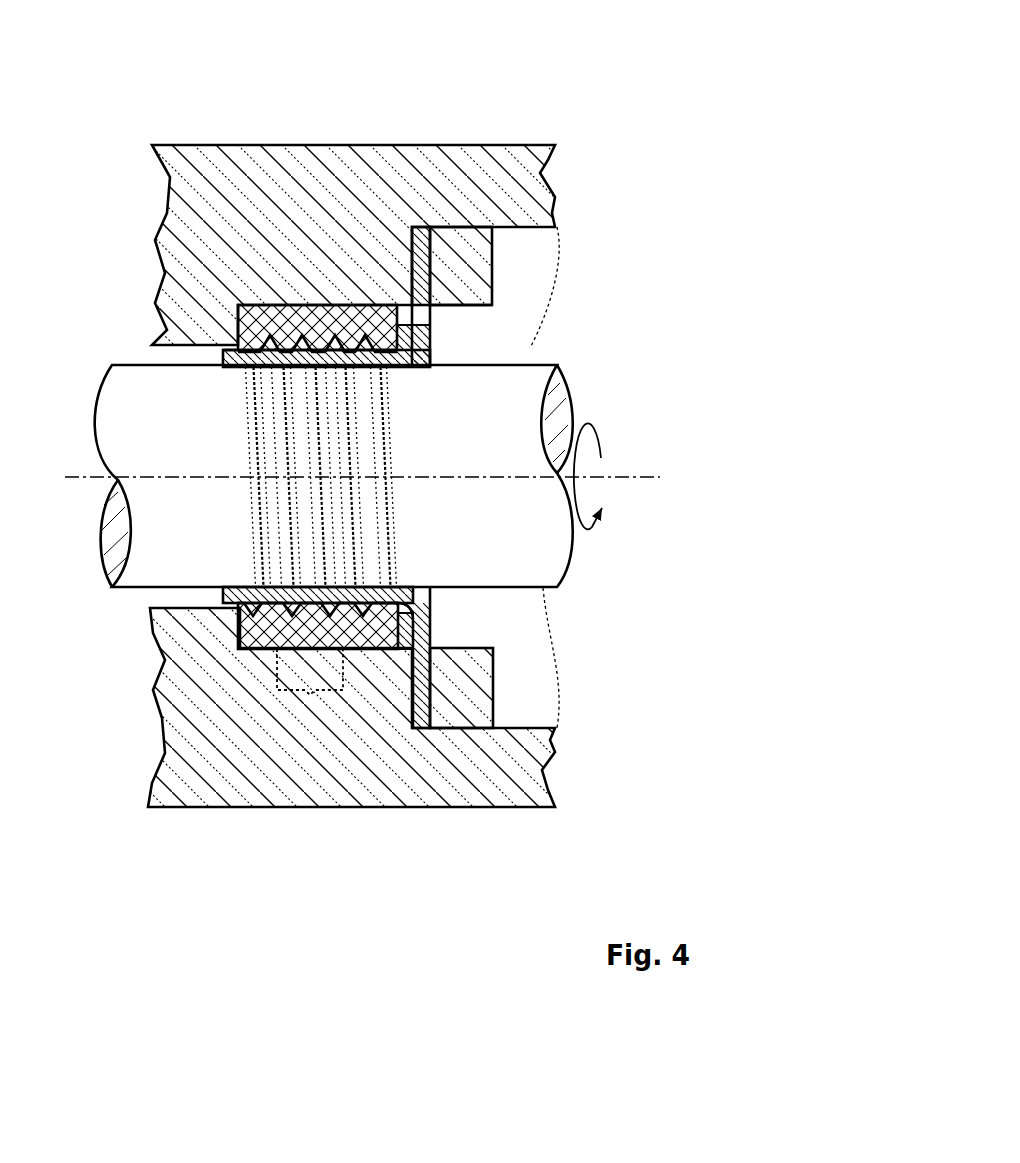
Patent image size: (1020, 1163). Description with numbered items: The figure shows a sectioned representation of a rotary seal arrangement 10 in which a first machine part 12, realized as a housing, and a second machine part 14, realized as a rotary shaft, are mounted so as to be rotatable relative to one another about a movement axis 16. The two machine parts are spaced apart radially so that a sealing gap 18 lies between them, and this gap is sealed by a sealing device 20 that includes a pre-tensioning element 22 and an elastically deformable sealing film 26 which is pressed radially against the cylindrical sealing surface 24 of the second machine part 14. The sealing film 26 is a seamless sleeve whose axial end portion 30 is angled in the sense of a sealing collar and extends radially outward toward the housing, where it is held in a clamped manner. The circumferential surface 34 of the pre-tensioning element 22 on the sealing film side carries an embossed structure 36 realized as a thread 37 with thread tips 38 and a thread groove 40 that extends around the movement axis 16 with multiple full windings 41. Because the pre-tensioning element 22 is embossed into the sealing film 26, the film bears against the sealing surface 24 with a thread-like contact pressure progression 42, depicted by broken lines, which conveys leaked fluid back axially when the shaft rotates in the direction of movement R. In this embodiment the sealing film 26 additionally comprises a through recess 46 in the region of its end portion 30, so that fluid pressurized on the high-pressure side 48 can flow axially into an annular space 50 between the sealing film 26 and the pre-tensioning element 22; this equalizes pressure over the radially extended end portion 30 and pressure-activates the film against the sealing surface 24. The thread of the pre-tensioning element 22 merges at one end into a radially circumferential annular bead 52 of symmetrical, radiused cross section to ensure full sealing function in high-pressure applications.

The seal arrangement 10 is at (642, 86).
The first machine part 12 is at (320, 222).
The second machine part 14 is at (465, 557).
The movement axis 16 is at (76, 480).
The sealing gap 18 is at (452, 360).
The sealing device 20 is at (438, 267).
The pre-tensioning element 22 is at (272, 323).
The sealing surface 24 is at (508, 352).
The sealing film 26 is at (240, 587).
The end portion 30 is at (422, 276).
The circumferential surface 34 is at (400, 372).
The embossed structure 36 is at (335, 613).
The thread 37 is at (305, 340).
The thread tips 38 is at (350, 440).
The thread groove 40 is at (376, 372).
The windings 41 is at (328, 693).
The contact pressure progression 42 is at (317, 535).
The recess 46 is at (405, 328).
The high-pressure side 48 is at (510, 312).
The annular space 50 is at (437, 372).
The annular bead 52 is at (232, 372).
The direction of movement R is at (600, 436).